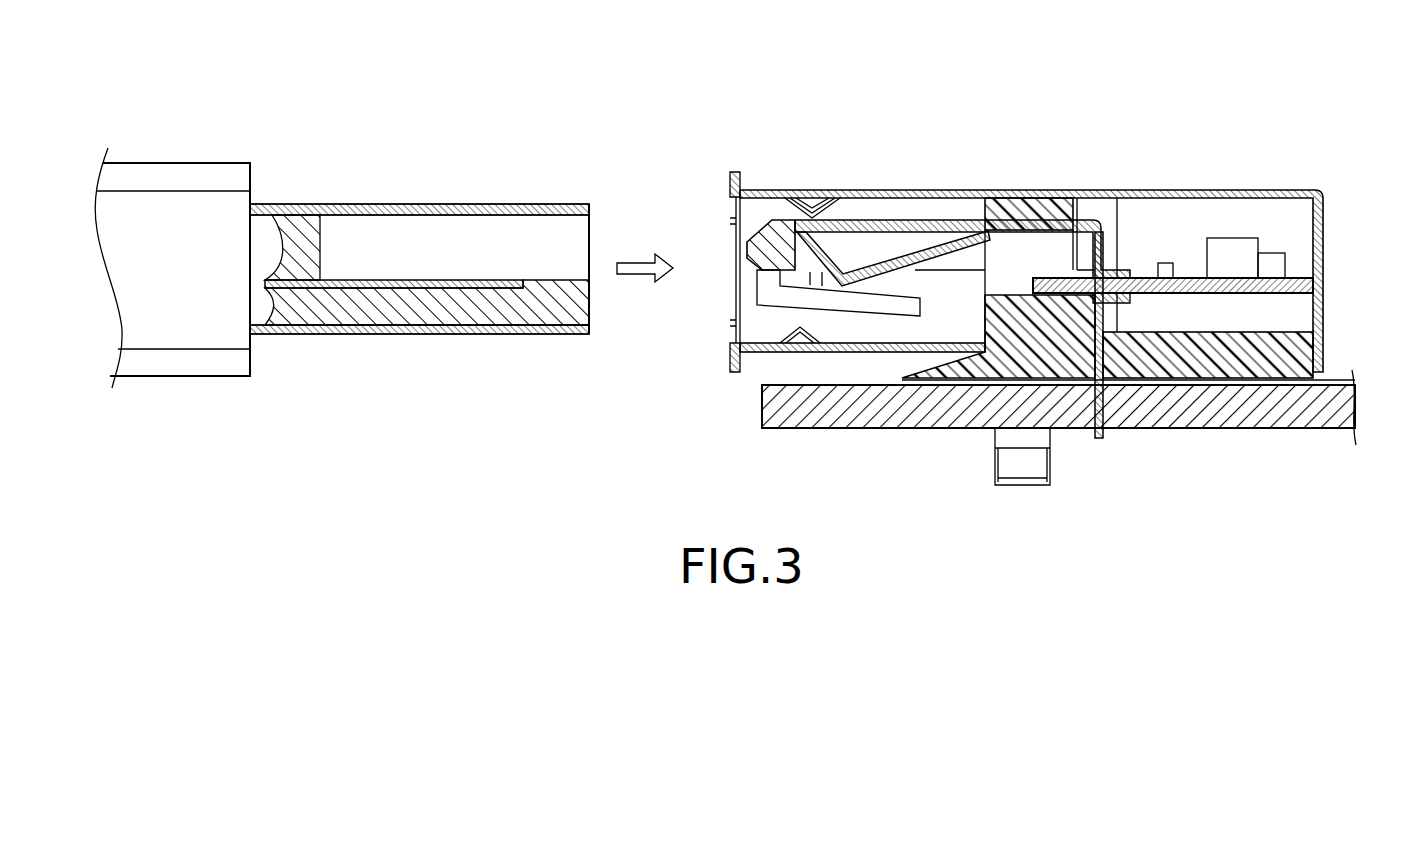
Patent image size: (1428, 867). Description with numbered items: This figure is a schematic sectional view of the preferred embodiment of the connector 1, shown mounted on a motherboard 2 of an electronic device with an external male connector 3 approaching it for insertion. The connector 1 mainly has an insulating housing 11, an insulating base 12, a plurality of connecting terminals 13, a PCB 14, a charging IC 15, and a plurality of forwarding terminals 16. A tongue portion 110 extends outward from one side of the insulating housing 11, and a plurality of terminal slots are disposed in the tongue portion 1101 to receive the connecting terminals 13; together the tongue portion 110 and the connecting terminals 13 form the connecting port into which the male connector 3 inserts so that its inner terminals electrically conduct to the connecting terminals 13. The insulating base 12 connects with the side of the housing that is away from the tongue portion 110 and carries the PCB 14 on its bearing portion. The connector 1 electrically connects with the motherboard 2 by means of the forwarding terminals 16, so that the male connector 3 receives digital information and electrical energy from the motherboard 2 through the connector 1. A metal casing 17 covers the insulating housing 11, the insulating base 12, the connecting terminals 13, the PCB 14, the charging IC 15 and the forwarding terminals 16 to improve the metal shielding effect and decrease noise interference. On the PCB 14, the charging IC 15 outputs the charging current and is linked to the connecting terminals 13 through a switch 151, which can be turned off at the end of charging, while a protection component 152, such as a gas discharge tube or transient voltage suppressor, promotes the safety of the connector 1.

The connector 1 is at (935, 148).
The motherboard 2 is at (773, 404).
The male connector 3 is at (412, 205).
The insulating housing 11 is at (1030, 222).
The insulating base 12 is at (1225, 385).
The connecting terminals 13 is at (868, 245).
The PCB 14 is at (1323, 258).
The charging IC 15 is at (1184, 207).
The forwarding terminals 16 is at (1103, 398).
The metal casing 17 is at (1097, 193).
The tongue portion 110 is at (830, 210).
The switch 151 is at (1165, 262).
The protection component 152 is at (1272, 262).
The tongue portion 1101 is at (757, 242).